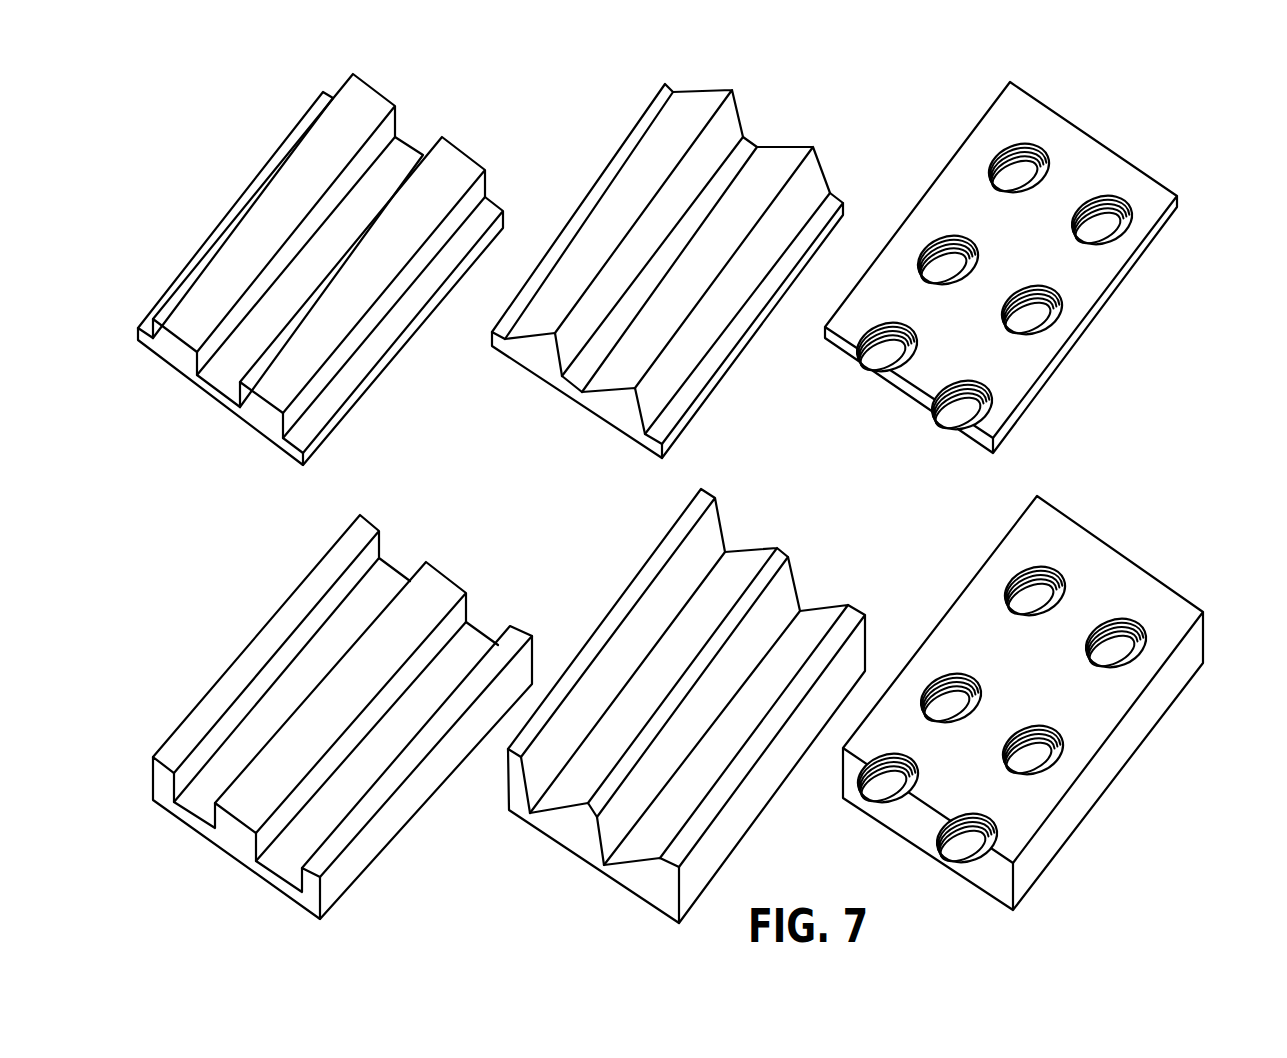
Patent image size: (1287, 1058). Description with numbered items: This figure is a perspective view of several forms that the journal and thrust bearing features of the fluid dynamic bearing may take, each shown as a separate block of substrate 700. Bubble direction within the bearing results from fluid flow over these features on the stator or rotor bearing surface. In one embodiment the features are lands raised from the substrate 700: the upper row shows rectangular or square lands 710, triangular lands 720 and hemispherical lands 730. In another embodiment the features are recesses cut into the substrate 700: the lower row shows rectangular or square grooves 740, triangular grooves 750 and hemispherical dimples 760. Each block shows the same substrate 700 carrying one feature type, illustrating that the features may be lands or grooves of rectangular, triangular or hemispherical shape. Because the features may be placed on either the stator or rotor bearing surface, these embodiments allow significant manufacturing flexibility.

The substrate 700 is at (394, 144).
The rectangular or square lands 710 is at (425, 172).
The triangular lands 720 is at (800, 149).
The hemispherical lands 730 is at (1094, 205).
The rectangular or square grooves 740 is at (461, 629).
The triangular grooves 750 is at (798, 612).
The hemispherical dimples 760 is at (1123, 618).